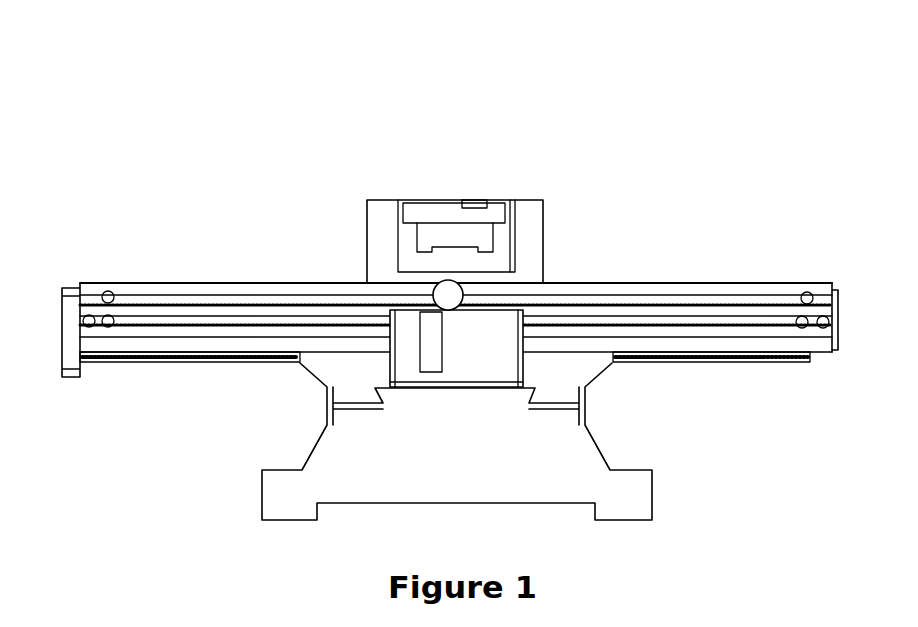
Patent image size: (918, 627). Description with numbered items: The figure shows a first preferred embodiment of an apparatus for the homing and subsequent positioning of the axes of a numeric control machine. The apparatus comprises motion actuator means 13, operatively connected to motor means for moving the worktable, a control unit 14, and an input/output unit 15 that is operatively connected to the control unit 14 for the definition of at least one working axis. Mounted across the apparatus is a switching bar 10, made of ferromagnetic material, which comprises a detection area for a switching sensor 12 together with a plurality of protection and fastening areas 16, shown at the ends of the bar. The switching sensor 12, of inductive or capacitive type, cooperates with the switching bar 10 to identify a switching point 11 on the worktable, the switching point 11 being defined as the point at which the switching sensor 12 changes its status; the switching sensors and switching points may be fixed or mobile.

The switching bar 10 is at (237, 283).
The switching point 11 is at (440, 288).
The switching sensor 12 is at (397, 360).
The motion actuator means 13 is at (448, 197).
The control unit 14 is at (455, 199).
The input/output unit 15 is at (465, 197).
The protection and fastening areas 16 is at (98, 283).